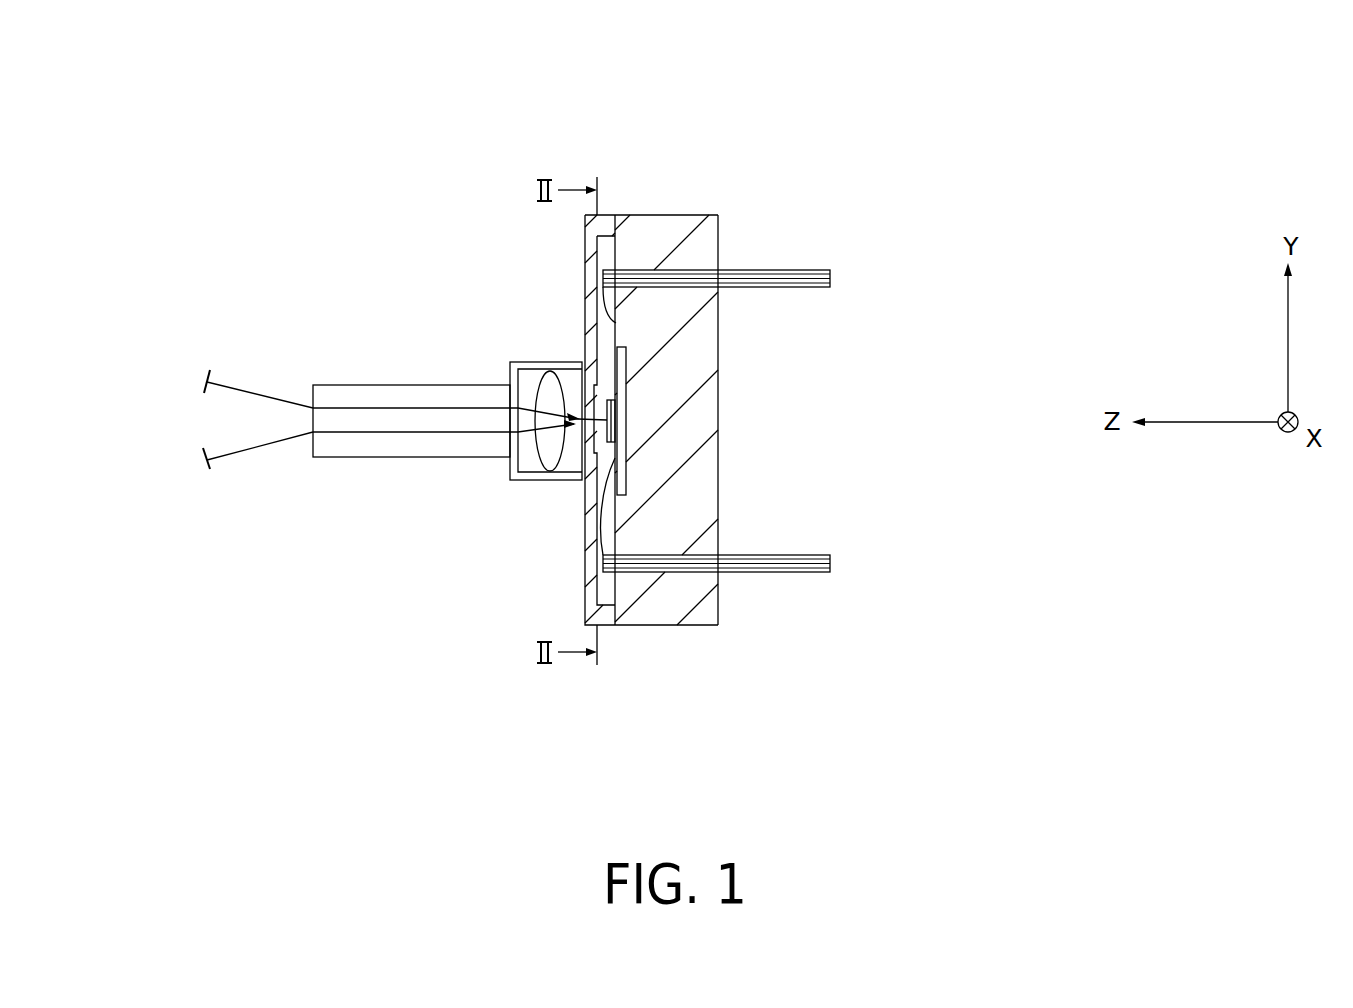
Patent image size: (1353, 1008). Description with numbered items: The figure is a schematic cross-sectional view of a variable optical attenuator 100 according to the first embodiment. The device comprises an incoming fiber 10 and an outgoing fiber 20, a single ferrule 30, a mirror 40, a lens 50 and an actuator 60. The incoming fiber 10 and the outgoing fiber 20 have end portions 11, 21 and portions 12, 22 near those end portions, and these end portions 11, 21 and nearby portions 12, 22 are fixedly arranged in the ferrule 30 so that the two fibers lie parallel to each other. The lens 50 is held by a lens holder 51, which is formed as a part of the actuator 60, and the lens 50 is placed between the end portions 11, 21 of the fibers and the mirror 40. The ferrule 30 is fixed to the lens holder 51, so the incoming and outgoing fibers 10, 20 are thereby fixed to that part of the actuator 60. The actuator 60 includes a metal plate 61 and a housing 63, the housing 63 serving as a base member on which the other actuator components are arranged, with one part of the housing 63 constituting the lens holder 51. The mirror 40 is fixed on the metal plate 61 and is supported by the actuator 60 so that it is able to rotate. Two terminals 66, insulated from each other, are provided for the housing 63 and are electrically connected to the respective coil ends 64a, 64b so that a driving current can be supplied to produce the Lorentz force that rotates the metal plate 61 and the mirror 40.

The variable optical attenuator 100 is at (452, 165).
The incoming fiber 10 is at (262, 382).
The outgoing fiber 20 is at (257, 448).
The ferrule 30 is at (343, 383).
The portion near end portion of incoming fiber 12 is at (408, 406).
The portion near end portion of outgoing fiber 22 is at (403, 457).
The end portion of incoming fiber 11 is at (518, 407).
The end portion of outgoing fiber 21 is at (515, 443).
The lens 50 is at (552, 370).
The lens holder 51 is at (548, 483).
The actuator 60 is at (664, 660).
The metal plate 61 is at (628, 368).
The housing 63 is at (690, 472).
The terminals 66 is at (778, 268).
The end of coil 64a is at (612, 325).
The end of coil 64b is at (600, 528).
The mirror 40 is at (627, 418).